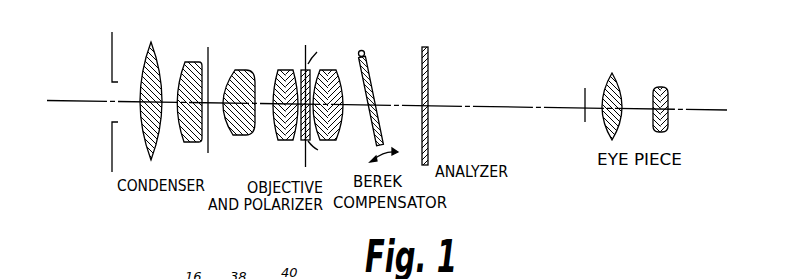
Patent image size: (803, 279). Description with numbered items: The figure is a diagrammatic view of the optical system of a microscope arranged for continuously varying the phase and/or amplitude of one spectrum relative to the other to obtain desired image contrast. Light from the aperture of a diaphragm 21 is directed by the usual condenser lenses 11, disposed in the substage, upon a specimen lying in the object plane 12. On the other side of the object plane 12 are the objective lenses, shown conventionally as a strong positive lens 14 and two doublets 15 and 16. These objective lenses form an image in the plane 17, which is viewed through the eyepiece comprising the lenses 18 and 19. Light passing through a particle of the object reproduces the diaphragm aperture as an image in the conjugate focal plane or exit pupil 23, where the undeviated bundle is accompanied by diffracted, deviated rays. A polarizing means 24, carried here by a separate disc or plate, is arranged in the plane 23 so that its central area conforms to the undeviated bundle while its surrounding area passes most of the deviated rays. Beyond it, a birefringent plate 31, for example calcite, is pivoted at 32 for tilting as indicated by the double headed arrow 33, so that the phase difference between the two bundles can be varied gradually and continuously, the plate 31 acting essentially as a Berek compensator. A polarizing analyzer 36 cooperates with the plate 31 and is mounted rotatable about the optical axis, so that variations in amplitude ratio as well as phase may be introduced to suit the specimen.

The diaphragm 21 is at (111, 43).
The condenser lenses 11 is at (182, 70).
The object plane 12 is at (208, 57).
The strong positive lens 14 is at (243, 70).
The doublet 15 is at (282, 70).
The doublet 16 is at (329, 70).
The conjugate focal plane or exit pupil 23 is at (306, 158).
The polarizing means 24 is at (303, 140).
The birefringent plate 31 is at (374, 93).
The pivot 32 is at (365, 52).
The double headed arrow 33 is at (378, 153).
The polarizing analyzer 36 is at (428, 50).
The image plane 17 is at (584, 88).
The eyepiece lens 18 is at (615, 81).
The eyepiece lens 19 is at (656, 88).